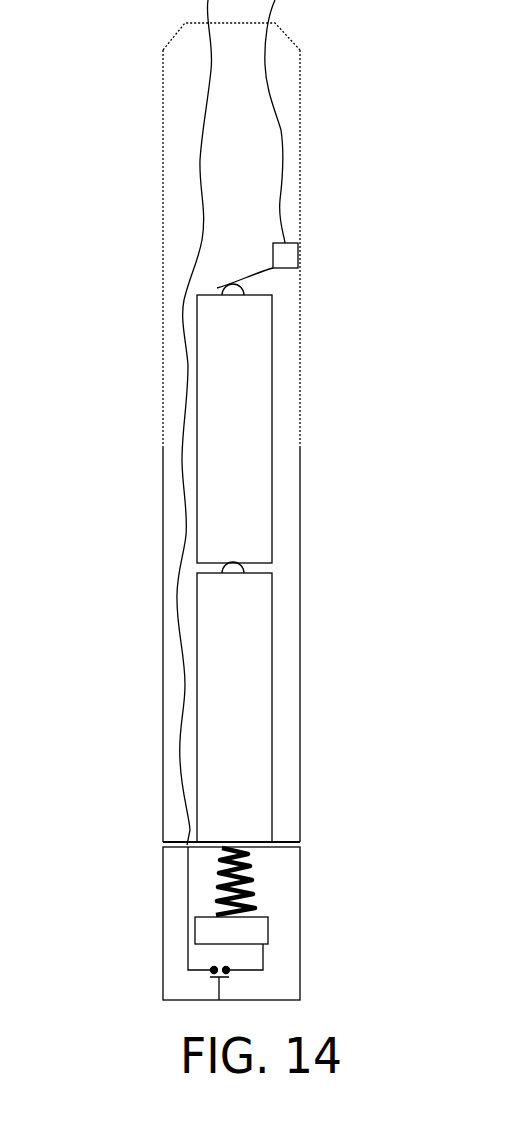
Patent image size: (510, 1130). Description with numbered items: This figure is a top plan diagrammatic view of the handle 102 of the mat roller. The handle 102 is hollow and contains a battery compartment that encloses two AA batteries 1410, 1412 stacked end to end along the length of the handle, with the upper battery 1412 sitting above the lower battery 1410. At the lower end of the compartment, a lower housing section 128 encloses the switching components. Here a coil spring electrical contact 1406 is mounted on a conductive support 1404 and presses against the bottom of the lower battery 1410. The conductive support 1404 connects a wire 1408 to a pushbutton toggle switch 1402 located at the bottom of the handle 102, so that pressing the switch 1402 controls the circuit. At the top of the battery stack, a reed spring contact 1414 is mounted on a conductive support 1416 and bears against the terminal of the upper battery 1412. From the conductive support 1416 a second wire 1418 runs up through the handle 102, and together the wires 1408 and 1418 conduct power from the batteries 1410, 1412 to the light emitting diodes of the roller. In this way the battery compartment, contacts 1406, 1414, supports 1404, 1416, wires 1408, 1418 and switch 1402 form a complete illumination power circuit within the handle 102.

The handle 102 is at (300, 440).
The lower housing / base 128 is at (300, 922).
The pushbutton toggle switch 1402 is at (200, 978).
The conductive support 1404 is at (256, 932).
The coil spring electrical contact 1406 is at (243, 876).
The wire 1408 is at (187, 877).
The AA battery 1410 is at (228, 655).
The AA battery 1412 is at (235, 495).
The reed spring contact 1414 is at (257, 282).
The conductive support 1416 is at (290, 250).
The wire 1418 is at (280, 125).